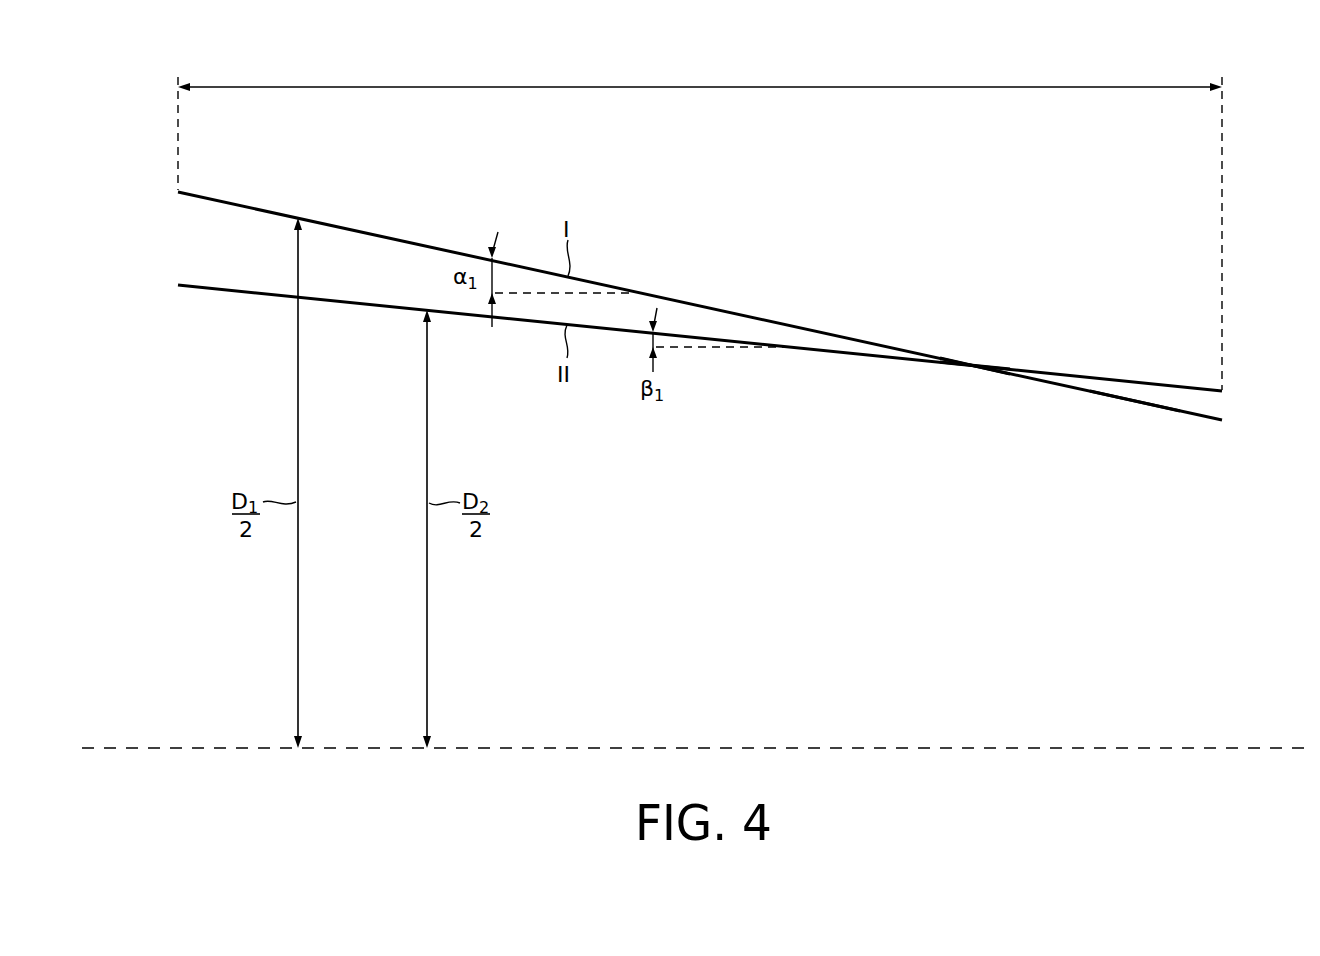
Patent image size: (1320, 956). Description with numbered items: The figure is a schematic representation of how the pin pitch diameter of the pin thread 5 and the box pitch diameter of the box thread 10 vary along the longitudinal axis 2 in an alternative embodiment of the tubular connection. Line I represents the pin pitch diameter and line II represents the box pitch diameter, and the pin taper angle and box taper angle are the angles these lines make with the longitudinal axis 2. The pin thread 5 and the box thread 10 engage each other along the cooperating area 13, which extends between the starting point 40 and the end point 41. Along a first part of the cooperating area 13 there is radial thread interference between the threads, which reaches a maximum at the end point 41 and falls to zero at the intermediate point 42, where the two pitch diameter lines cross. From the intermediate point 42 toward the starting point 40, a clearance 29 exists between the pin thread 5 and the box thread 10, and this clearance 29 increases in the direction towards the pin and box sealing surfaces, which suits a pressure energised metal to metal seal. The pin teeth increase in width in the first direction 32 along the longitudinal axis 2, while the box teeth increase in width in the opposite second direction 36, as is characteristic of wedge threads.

The longitudinal axis 2 is at (124, 752).
The pin thread 5 is at (818, 320).
The box thread 10 is at (808, 356).
The cooperating area 13 is at (704, 87).
The clearance 29 is at (1131, 408).
The first direction 32 is at (996, 62).
The second direction 36 is at (1029, 647).
The starting point 40 is at (1245, 413).
The end point 41 is at (163, 238).
The intermediate point 42 is at (980, 378).